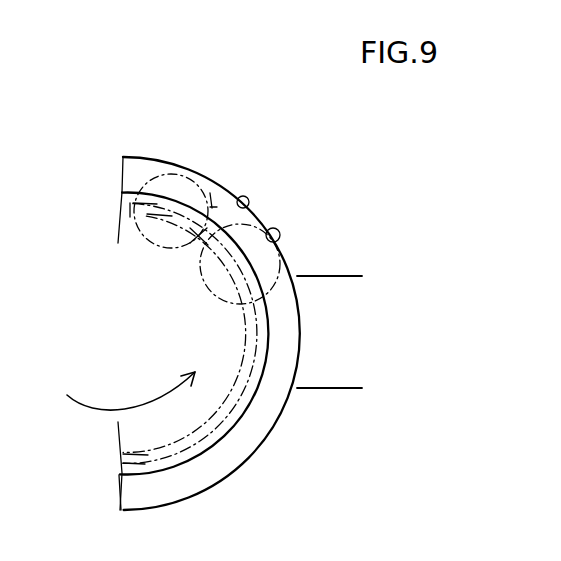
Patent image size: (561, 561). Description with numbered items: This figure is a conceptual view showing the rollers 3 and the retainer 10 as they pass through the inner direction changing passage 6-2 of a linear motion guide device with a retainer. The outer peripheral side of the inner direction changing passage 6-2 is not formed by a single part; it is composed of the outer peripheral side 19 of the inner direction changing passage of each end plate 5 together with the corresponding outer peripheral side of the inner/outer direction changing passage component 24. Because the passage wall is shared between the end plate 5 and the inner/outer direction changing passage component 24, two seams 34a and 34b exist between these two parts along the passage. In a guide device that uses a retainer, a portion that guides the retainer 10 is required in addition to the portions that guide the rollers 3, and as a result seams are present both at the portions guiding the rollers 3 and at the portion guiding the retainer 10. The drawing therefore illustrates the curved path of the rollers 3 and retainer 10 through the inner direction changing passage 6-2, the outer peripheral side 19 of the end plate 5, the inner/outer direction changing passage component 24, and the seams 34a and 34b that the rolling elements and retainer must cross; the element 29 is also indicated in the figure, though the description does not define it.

The roller 3 is at (170, 187).
The retainer 10 is at (187, 212).
The inner direction changing passage 6-2 is at (252, 208).
The outer peripheral side of the inner direction changing passage of the end plate 19 is at (282, 240).
The end plate 5 is at (313, 238).
The seam 34a is at (300, 275).
The seam 34b is at (300, 388).
The inner/outer direction changing passage component 24 is at (332, 310).
The flange portion 29 is at (212, 468).